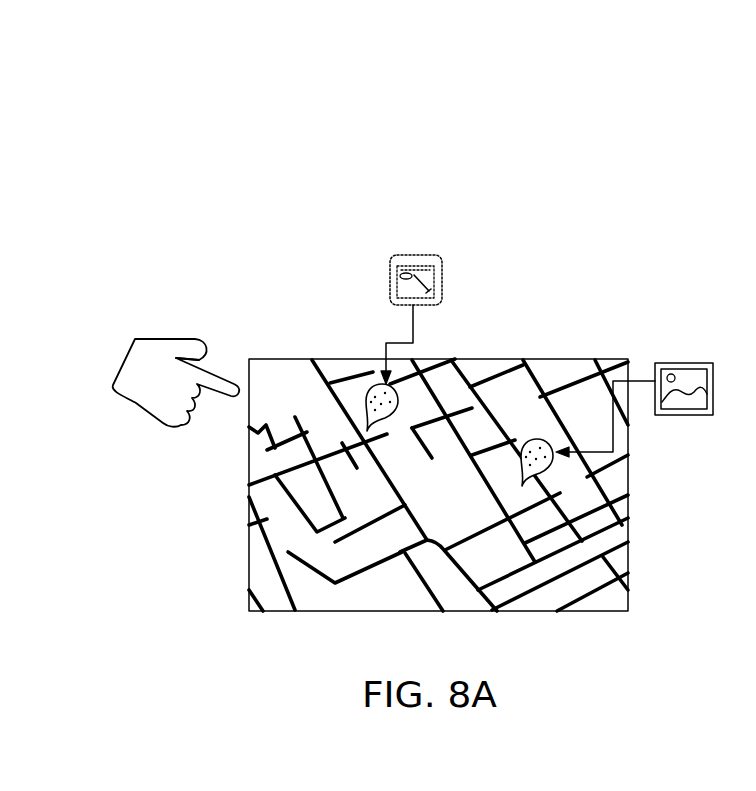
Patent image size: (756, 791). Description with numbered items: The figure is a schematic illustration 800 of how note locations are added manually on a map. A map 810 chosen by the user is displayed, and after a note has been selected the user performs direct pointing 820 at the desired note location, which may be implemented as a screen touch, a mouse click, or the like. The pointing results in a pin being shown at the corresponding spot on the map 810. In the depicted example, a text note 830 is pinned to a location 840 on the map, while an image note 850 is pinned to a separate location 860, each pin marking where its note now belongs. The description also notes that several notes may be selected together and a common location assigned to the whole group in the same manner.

The schematic illustration 800 is at (605, 129).
The map 810 is at (545, 354).
The direct pointing 820 is at (170, 331).
The text note 830 is at (411, 252).
The location 840 is at (362, 397).
The image note 850 is at (677, 354).
The location 860 is at (552, 470).